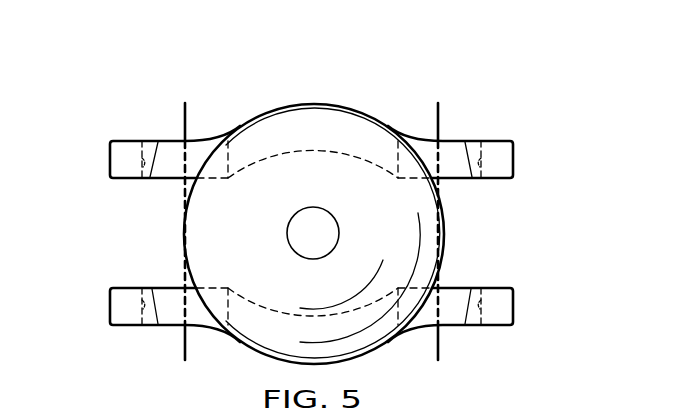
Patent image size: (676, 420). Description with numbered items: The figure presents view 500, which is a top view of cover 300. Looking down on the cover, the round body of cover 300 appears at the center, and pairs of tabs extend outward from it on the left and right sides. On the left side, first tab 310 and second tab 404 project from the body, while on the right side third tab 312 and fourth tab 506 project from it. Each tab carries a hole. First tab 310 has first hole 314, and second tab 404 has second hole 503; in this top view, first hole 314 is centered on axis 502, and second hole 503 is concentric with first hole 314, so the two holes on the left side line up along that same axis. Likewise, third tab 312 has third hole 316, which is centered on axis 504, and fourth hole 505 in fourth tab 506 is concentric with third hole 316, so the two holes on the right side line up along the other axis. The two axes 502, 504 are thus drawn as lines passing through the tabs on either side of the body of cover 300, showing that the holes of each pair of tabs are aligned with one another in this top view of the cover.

The view 500 is at (385, 68).
The cover 300 is at (257, 95).
The axis 502 is at (185, 103).
The axis 504 is at (438, 103).
The second tab 404 is at (118, 158).
The fourth tab 506 is at (505, 158).
The first tab 310 is at (118, 308).
The third tab 312 is at (505, 308).
The second hole 503 is at (152, 150).
The fourth hole 505 is at (474, 150).
The first hole 314 is at (162, 292).
The third hole 316 is at (463, 292).